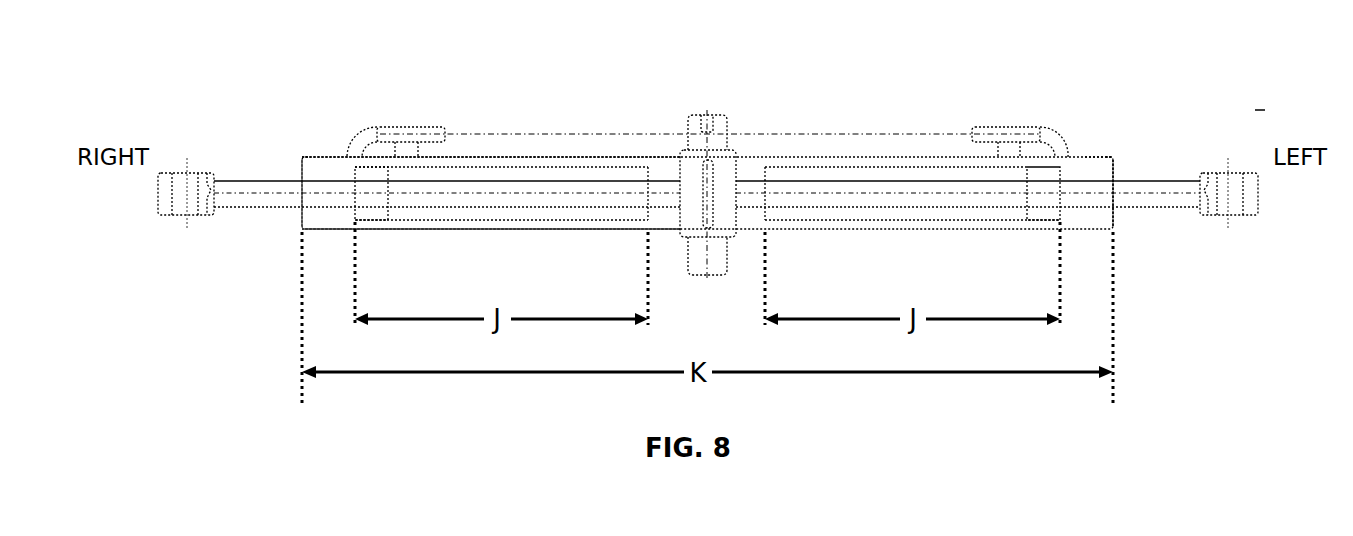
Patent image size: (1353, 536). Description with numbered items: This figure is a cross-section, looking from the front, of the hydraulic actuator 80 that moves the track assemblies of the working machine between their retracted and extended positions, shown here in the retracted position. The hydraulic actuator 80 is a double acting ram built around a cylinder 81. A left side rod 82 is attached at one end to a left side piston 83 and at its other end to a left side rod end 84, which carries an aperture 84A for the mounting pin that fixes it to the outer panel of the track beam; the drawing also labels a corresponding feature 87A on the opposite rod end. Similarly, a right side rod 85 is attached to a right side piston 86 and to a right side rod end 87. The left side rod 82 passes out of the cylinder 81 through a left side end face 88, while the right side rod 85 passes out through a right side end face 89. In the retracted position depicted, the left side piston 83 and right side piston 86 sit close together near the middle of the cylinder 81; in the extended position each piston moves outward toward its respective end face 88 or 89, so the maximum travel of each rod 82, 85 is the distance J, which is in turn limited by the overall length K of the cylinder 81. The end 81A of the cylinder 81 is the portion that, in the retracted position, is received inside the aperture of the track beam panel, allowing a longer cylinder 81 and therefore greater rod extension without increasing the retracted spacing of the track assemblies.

The hydraulic actuator 80 is at (827, 158).
The cylinder 81 is at (535, 158).
The end of cylinder 81A is at (1090, 158).
The left side rod 82 is at (1133, 203).
The left side piston 83 is at (372, 188).
The left side rod end 84 is at (1252, 203).
The aperture of left side rod end 84A is at (1235, 193).
The right side rod 85 is at (287, 202).
The right side piston 86 is at (665, 175).
The right side rod end 87 is at (160, 202).
The right fitting bore 87A is at (185, 193).
The left side end face 88 is at (1115, 172).
The right side end face 89 is at (300, 170).